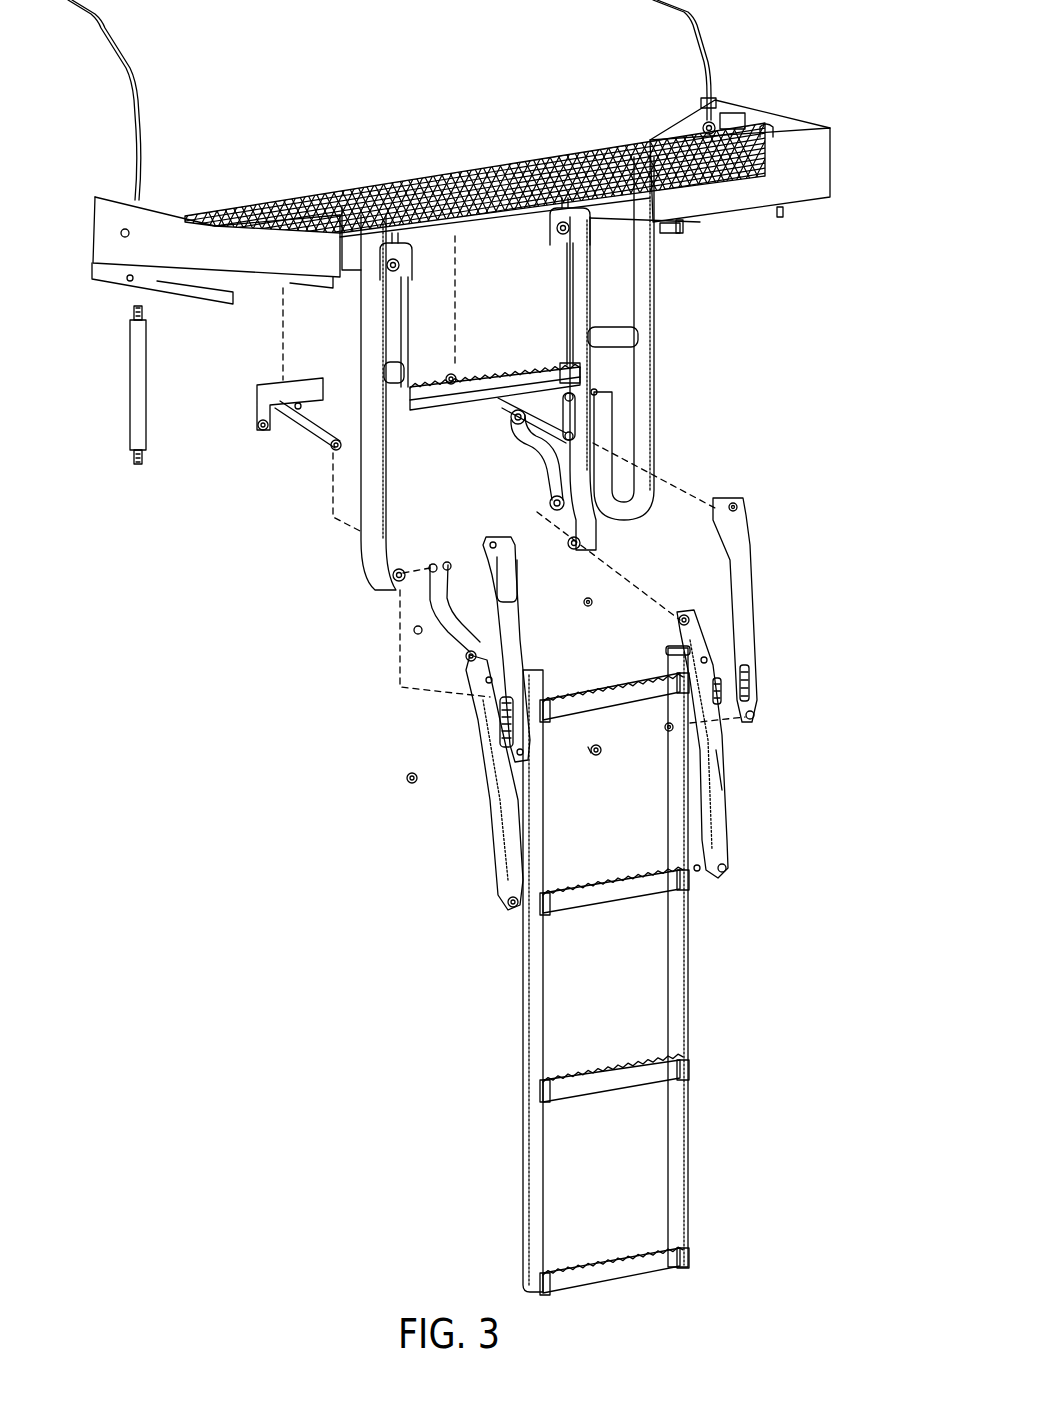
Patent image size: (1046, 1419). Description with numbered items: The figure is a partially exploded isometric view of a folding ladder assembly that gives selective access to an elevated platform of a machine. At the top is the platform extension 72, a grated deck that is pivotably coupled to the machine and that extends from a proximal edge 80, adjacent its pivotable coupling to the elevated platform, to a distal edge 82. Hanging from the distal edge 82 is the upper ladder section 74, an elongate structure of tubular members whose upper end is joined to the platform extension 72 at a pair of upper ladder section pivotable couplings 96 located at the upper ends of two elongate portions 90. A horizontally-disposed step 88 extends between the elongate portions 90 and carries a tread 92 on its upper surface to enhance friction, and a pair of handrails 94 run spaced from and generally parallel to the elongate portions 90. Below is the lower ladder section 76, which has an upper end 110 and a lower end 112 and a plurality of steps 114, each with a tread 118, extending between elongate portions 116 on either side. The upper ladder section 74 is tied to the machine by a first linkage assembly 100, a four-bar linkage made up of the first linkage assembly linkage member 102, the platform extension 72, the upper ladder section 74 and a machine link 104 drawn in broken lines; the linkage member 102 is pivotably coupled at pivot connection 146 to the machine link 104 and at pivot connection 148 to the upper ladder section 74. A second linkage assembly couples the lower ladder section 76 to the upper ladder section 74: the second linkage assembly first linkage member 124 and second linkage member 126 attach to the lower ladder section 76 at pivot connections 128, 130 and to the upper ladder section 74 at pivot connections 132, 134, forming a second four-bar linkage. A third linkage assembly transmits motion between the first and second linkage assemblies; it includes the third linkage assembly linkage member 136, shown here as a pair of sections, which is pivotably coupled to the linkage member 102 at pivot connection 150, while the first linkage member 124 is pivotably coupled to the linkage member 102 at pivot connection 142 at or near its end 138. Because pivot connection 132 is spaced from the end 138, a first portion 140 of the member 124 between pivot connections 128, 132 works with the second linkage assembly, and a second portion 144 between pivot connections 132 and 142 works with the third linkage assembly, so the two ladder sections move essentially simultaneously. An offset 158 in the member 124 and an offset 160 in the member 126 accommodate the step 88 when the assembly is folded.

The platform extension 72 is at (537, 162).
The upper ladder section 74 is at (580, 287).
The lower ladder section 76 is at (677, 970).
The proximal edge 80 is at (243, 207).
The distal edge 82 is at (475, 224).
The step 88 is at (450, 397).
The elongate portion 90 is at (577, 413).
The tread 92 is at (540, 365).
The handrail 94 is at (642, 308).
The upper ladder section pivotable coupling 96 is at (553, 224).
The first linkage assembly 100 is at (240, 467).
The first linkage assembly linkage member 102 is at (313, 425).
The machine link 104 is at (283, 333).
The upper end 110 is at (673, 663).
The lower end 112 is at (690, 1257).
The step 114 is at (617, 1270).
The elongate portion 116 is at (533, 1193).
The tread 118 is at (613, 1255).
The second linkage assembly first linkage member 124 is at (500, 830).
The second linkage assembly second linkage member 126 is at (508, 643).
The pivot connection 128 is at (505, 905).
The pivot connection 130 is at (670, 730).
The pivot connection 132 is at (398, 575).
The pivot connection 134 is at (592, 392).
The third linkage assembly linkage member 136 is at (442, 630).
The end 138 is at (683, 620).
The first portion 140 is at (498, 795).
The pivot connection 142 is at (470, 653).
The second portion 144 is at (487, 677).
The pivot connection 146 is at (450, 377).
The pivot connection 148 is at (577, 432).
The pivot connection 150 is at (517, 415).
The offset 158 is at (718, 768).
The offset 160 is at (500, 560).